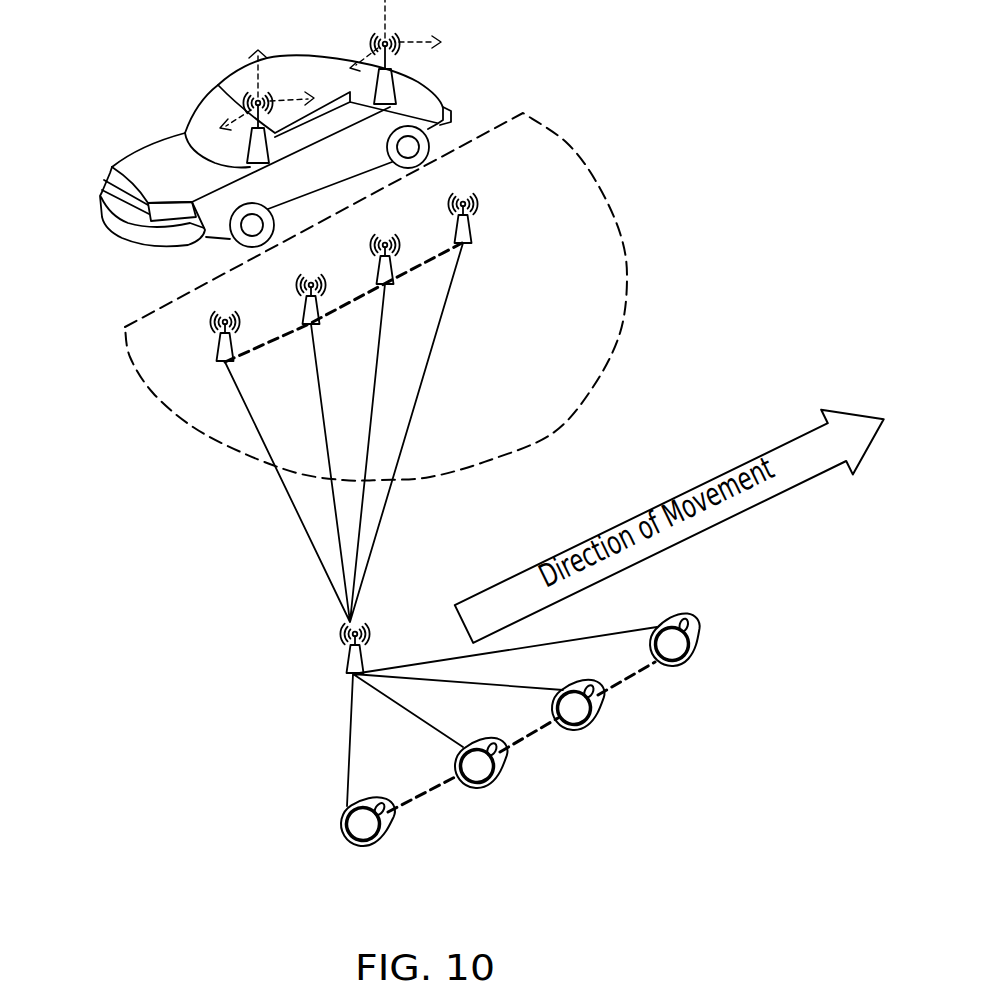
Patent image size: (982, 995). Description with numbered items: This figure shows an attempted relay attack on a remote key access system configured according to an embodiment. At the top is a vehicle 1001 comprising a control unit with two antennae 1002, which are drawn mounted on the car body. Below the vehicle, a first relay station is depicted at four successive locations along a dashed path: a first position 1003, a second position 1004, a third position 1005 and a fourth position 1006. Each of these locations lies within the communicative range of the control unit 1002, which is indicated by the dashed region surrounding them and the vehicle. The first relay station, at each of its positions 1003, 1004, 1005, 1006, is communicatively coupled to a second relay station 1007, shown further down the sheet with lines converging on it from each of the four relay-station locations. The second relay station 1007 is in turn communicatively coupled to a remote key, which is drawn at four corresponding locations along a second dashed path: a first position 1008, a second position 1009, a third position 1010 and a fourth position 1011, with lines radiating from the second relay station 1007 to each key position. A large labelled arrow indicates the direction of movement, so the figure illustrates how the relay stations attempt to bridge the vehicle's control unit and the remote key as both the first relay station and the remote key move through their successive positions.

The vehicle 1001 is at (131, 149).
The antennae 1002 is at (275, 147).
The first position of first relay station 1003 is at (217, 371).
The second position of first relay station 1004 is at (332, 322).
The third position of first relay station 1005 is at (404, 283).
The fourth position of first relay station 1006 is at (487, 238).
The second relay station 1007 is at (336, 666).
The first position of remote key 1008 is at (334, 837).
The second position of remote key 1009 is at (506, 787).
The third position of remote key 1010 is at (615, 725).
The fourth position of remote key 1011 is at (704, 661).